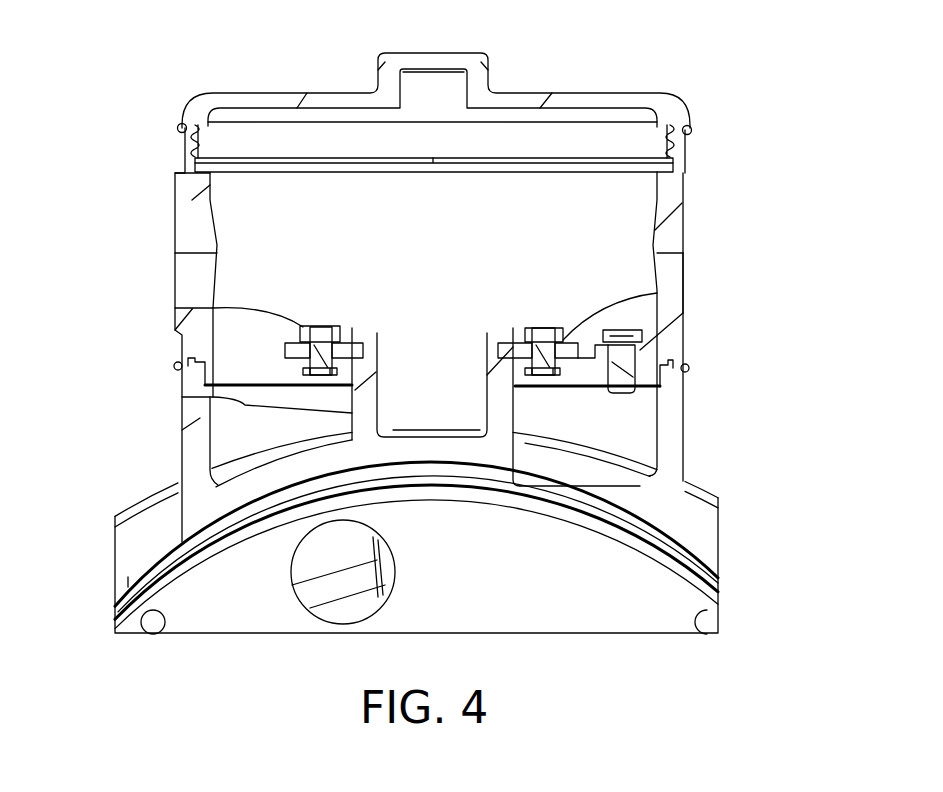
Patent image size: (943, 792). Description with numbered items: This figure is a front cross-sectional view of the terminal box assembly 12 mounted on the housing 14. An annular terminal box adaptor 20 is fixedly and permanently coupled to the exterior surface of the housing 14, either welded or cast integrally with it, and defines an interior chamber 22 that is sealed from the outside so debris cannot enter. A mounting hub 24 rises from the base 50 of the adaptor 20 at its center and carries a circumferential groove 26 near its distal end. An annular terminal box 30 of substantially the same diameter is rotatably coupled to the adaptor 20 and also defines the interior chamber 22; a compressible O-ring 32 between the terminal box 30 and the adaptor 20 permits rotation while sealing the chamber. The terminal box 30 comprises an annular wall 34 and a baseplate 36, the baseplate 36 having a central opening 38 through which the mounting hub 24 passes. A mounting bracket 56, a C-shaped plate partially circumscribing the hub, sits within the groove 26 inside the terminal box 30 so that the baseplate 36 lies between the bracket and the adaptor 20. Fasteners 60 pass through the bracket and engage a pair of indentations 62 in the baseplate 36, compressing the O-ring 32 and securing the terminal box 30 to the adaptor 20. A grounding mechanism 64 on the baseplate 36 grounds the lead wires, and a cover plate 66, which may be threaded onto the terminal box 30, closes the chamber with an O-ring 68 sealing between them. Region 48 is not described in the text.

The terminal box assembly 12 is at (138, 86).
The housing 14 is at (118, 598).
The terminal box adaptor 20 is at (197, 457).
The interior chamber 22 is at (620, 447).
The mounting hub 24 is at (245, 427).
The circumferential groove 26 is at (527, 329).
The terminal box 30 is at (692, 188).
The O-ring 32 is at (174, 367).
The annular wall 34 is at (668, 255).
The baseplate 36 is at (255, 384).
The central opening 38 is at (525, 382).
The ring portion 48 is at (198, 221).
The base 50 is at (578, 473).
The mounting bracket 56 is at (563, 347).
The fastener 60 is at (212, 320).
The indentation 62 is at (278, 362).
The grounding mechanism 64 is at (620, 336).
The cover plate 66 is at (653, 103).
The O-ring 68 is at (692, 131).